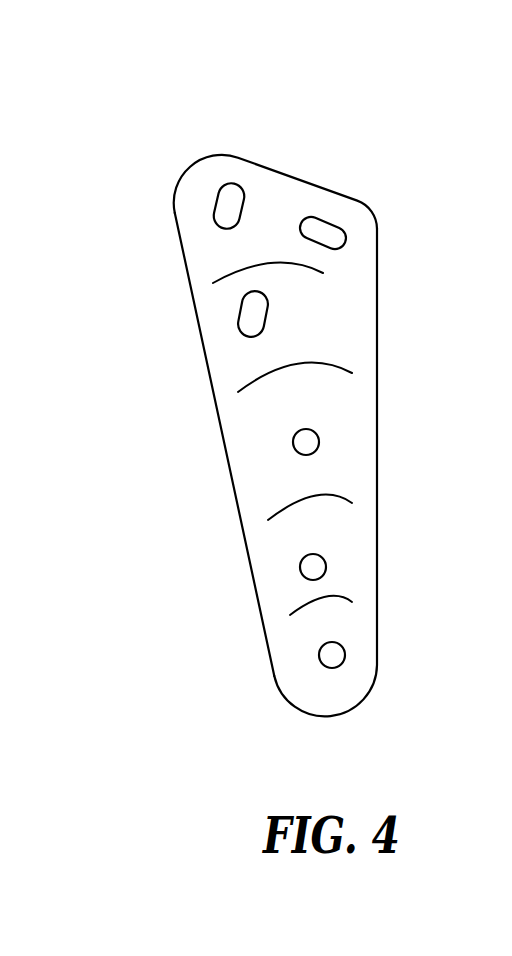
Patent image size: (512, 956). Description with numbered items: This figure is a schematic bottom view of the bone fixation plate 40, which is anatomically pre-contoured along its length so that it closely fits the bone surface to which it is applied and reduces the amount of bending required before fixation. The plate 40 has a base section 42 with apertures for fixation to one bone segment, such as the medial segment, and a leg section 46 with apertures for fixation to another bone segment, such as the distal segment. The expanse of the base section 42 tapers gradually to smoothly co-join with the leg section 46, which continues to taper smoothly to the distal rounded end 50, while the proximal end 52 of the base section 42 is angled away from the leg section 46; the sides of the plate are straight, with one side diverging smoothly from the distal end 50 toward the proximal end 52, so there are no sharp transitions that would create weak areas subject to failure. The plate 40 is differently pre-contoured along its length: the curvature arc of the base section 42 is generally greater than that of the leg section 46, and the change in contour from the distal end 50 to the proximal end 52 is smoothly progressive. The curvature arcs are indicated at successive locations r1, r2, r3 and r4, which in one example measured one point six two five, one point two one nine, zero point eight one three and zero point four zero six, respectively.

The fixation plate 40 is at (292, 413).
The proximal end 52 is at (275, 162).
The distal rounded end 50 is at (313, 716).
The base section 42 is at (395, 180).
The leg section 46 is at (395, 422).
The curvature arc r1 is at (293, 613).
The curvature arc r2 is at (275, 513).
The curvature arc r3 is at (247, 387).
The curvature arc r4 is at (218, 282).